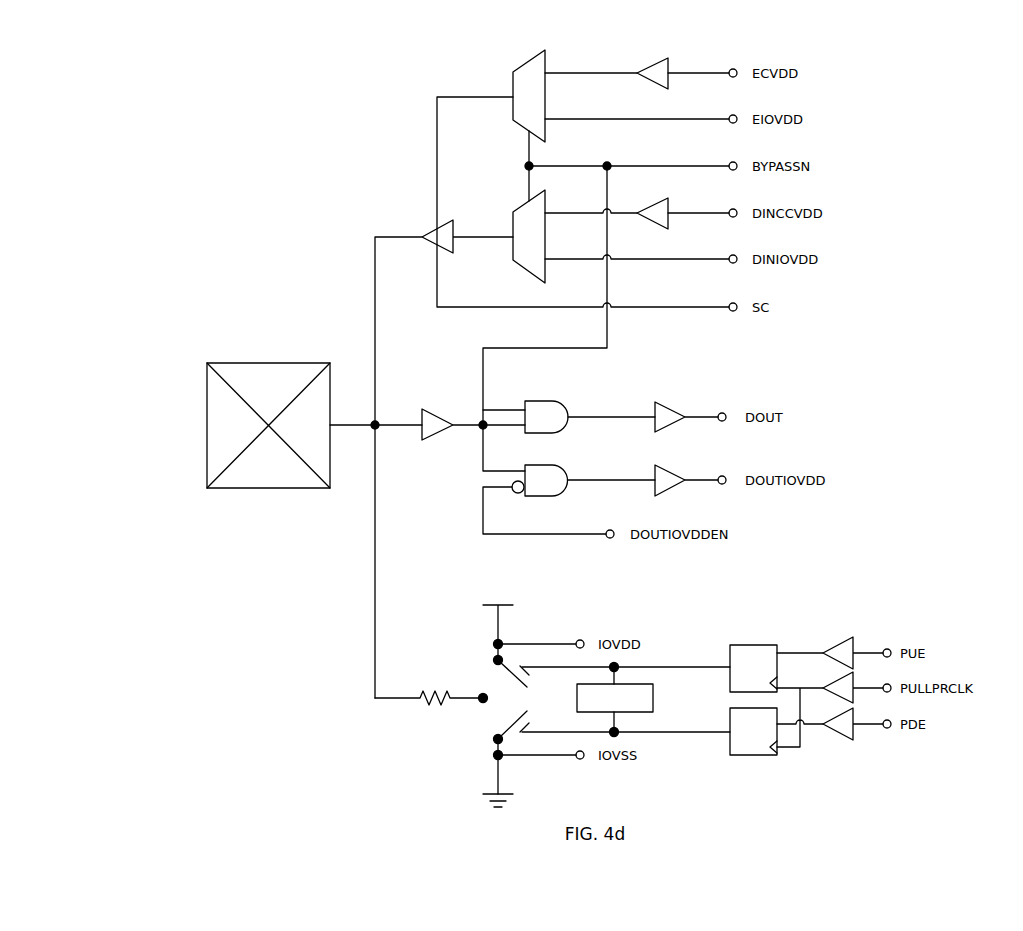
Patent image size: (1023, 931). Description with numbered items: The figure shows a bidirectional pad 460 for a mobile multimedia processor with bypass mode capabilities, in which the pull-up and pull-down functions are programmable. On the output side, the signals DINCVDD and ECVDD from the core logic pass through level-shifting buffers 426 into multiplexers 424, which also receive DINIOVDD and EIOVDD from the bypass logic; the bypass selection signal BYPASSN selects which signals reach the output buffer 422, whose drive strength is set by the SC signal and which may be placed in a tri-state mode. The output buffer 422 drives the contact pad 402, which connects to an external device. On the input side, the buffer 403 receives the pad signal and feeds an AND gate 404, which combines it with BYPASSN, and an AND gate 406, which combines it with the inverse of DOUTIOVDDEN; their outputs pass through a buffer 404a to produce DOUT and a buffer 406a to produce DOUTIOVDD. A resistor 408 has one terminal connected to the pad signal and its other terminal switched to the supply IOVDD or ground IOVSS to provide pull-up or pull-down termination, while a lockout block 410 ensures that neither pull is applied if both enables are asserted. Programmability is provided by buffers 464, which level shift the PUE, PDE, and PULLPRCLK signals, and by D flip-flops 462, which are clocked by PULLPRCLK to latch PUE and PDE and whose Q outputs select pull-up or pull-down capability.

The bidirectional pad 460 is at (276, 85).
The multiplexer 424 is at (549, 58).
The buffer 426 is at (670, 70).
The output buffer 422 is at (455, 228).
The contact pad 402 is at (245, 363).
The buffer 403 is at (436, 412).
The AND gate 404 is at (568, 408).
The buffer 404a is at (680, 412).
The AND gate 406 is at (568, 471).
The buffer 406a is at (680, 475).
The resistor 408 is at (440, 672).
The lockout block 410 is at (655, 700).
The D flip-flop 462 is at (737, 645).
The buffer 464 is at (830, 645).